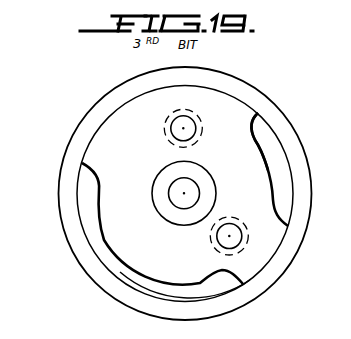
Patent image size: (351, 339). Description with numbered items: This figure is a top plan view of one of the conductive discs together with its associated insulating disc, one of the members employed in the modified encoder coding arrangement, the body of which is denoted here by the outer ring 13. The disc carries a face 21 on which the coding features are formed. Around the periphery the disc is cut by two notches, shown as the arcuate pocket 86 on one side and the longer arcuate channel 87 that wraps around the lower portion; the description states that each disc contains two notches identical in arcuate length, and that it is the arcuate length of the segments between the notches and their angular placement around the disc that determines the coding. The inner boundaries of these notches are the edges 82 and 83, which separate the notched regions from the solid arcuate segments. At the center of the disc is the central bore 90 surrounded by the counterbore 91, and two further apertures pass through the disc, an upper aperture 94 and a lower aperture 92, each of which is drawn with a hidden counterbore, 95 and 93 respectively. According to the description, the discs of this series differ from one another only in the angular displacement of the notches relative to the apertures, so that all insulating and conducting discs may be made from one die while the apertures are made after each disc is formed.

The bit body 13 is at (90, 120).
The cutting face 21 is at (133, 152).
The pocket edge land 82 is at (264, 152).
The pocket inner edge land 83 is at (165, 263).
The right pocket 86 is at (266, 164).
The arcuate channel 87 is at (200, 288).
The central bore 90 is at (180, 206).
The central counterbore 91 is at (157, 190).
The lower hole 92 is at (248, 240).
The lower hole counterbore (hidden) 93 is at (216, 250).
The upper hole 94 is at (184, 119).
The upper hole counterbore (hidden) 95 is at (203, 128).